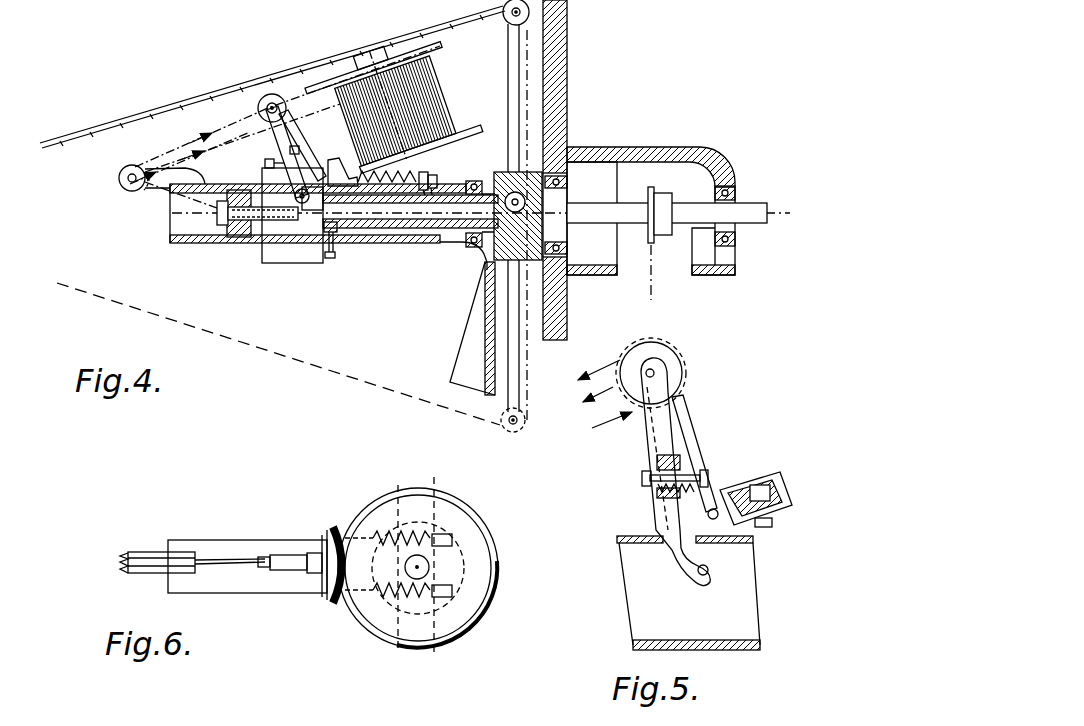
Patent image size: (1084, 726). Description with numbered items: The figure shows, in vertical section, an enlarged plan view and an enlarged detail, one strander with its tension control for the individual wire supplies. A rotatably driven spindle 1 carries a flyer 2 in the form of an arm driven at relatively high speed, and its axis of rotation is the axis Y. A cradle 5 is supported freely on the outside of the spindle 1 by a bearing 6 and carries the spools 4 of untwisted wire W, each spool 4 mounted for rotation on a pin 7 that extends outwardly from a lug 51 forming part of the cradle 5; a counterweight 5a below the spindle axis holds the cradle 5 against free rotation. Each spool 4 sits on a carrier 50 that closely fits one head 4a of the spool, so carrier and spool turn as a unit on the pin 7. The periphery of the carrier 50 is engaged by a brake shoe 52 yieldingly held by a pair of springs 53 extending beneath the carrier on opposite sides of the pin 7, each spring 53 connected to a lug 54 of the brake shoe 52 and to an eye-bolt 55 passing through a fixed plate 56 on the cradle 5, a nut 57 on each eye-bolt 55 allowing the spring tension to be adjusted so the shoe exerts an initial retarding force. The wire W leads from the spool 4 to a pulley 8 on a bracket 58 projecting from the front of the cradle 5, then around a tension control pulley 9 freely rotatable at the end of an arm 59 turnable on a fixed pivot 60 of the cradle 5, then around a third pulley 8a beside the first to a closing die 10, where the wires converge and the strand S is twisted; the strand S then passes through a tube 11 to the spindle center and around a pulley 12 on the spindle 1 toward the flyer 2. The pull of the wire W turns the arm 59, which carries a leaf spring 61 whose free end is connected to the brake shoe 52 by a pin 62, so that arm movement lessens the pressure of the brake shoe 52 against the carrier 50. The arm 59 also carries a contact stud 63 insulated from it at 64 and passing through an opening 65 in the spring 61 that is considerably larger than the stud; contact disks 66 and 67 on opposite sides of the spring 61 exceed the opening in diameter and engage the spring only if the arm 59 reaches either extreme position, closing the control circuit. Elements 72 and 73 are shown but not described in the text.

In FIG. 4, the spindle 1 is at (590, 208).
In FIG. 4, the flyer 2 is at (514, 82).
In FIG. 4, the spool 4 is at (382, 80).
In FIG. 4, the spool head 4a is at (422, 93).
In FIG. 6, the spool head 4a is at (465, 521).
In FIG. 4, the cradle 5 is at (500, 148).
In FIG. 4, the counterweight 5a is at (463, 367).
In FIG. 4, the bearing 6 is at (338, 234).
In FIG. 4, the pin 7 is at (386, 84).
In FIG. 6, the pin 7 is at (430, 567).
In FIG. 4, the pulley 8 is at (121, 181).
In FIG. 6, the pulley 8 is at (120, 572).
In FIG. 6, the third pulley 8a is at (124, 556).
In FIG. 4, the tension control pulley 9 is at (272, 93).
In FIG. 5, the tension control pulley 9 is at (666, 368).
In FIG. 6, the tension control pulley 9 is at (266, 555).
In FIG. 4, the closing die 10 is at (222, 228).
In FIG. 4, the tube 11 is at (258, 228).
In FIG. 4, the pulley 12 is at (484, 264).
In FIG. 4, the carrier 50 is at (418, 130).
In FIG. 5, the carrier 50 is at (758, 492).
In FIG. 6, the carrier 50 is at (498, 578).
In FIG. 4, the lug 51 is at (428, 172).
In FIG. 5, the brake shoe 52 is at (738, 490).
In FIG. 6, the brake shoe 52 is at (340, 527).
In FIG. 4, the spring 53 is at (386, 205).
In FIG. 6, the spring 53 is at (411, 565).
In FIG. 4, the lug 54 is at (349, 168).
In FIG. 6, the lug 54 is at (366, 531).
In FIG. 6, the eye-bolt 55 is at (434, 533).
In FIG. 4, the fixed plate 56 is at (480, 214).
In FIG. 6, the fixed plate 56 is at (462, 582).
In FIG. 4, the nut 57 is at (437, 180).
In FIG. 4, the bracket 58 is at (160, 188).
In FIG. 6, the bracket 58 is at (153, 550).
In FIG. 4, the arm 59 is at (292, 121).
In FIG. 5, the arm 59 is at (660, 432).
In FIG. 4, the fixed pivot 60 is at (306, 214).
In FIG. 5, the fixed pivot 60 is at (706, 576).
In FIG. 4, the leaf spring 61 is at (295, 112).
In FIG. 5, the leaf spring 61 is at (690, 417).
In FIG. 6, the leaf spring 61 is at (292, 555).
In FIG. 5, the pin 62 is at (708, 514).
In FIG. 4, the contact stud 63 is at (265, 163).
In FIG. 5, the contact stud 63 is at (642, 481).
In FIG. 5, the insulation 64 is at (660, 487).
In FIG. 5, the opening 65 is at (690, 476).
In FIG. 5, the contact disk 66 is at (706, 472).
In FIG. 5, the contact disk 67 is at (658, 466).
In FIG. 4, the pin 72 is at (330, 250).
In FIG. 4, the nut 73 is at (339, 240).
In FIG. 4, the strand S is at (400, 36).
In FIG. 5, the wire W is at (772, 523).
In FIG. 4, the spindle axis Y is at (668, 213).